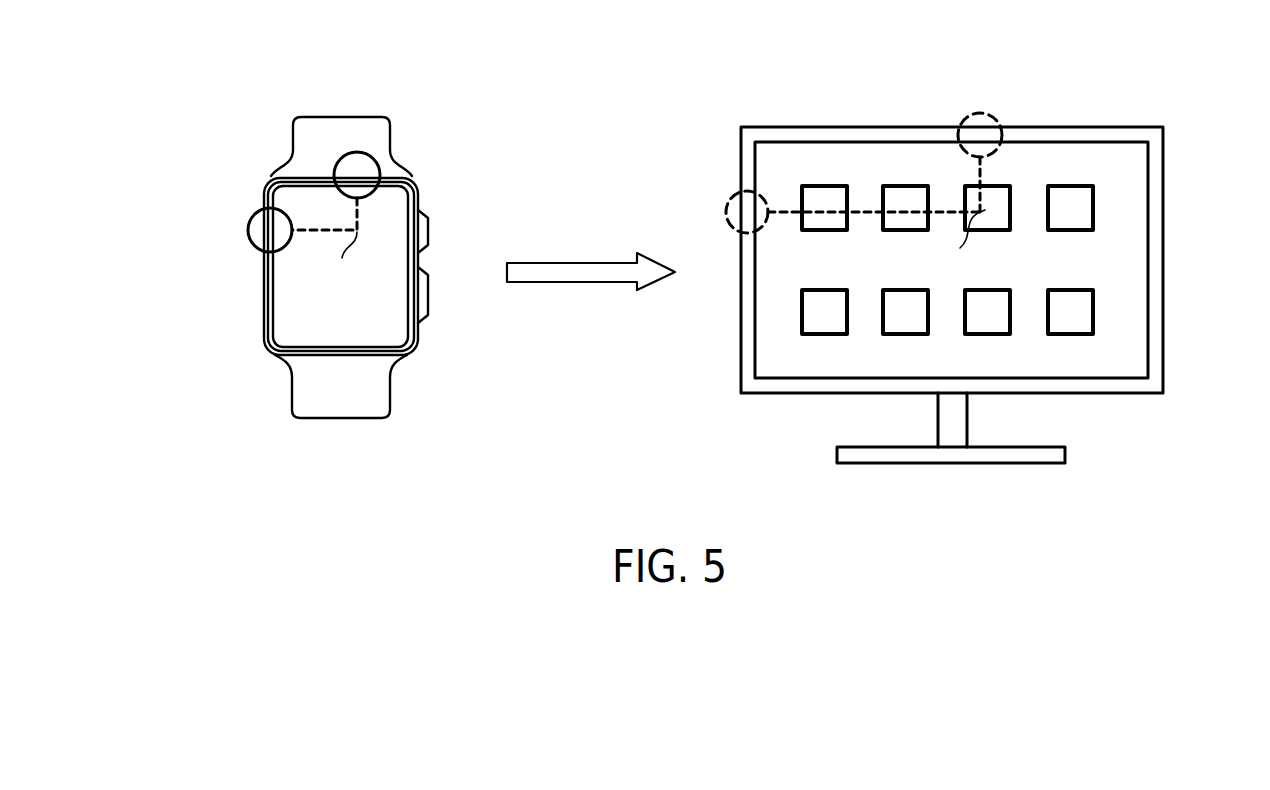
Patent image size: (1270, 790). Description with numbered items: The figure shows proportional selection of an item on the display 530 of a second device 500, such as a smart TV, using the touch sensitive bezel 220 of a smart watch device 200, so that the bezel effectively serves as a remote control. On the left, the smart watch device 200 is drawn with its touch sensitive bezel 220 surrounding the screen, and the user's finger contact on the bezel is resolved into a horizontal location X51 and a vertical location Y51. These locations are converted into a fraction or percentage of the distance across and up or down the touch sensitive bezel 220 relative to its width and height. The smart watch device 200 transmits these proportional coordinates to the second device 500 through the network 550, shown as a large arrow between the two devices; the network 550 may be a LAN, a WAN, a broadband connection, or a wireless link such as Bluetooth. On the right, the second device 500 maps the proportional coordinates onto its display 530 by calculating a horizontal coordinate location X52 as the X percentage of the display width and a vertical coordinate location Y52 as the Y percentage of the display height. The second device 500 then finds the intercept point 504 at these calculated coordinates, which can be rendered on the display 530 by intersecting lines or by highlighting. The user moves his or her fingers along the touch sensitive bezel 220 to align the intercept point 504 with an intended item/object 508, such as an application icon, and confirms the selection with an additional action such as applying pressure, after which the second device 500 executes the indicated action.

The smart watch device 200 is at (324, 292).
The touch sensitive bezel 220 is at (308, 170).
The horizontal location X51 is at (378, 161).
The vertical location Y51 is at (247, 232).
The second device 500 is at (906, 310).
The intercept point 504 is at (985, 210).
The item/object 508 is at (965, 188).
The display 530 is at (1074, 355).
The network 550 is at (576, 283).
The horizontal coordinate location X52 is at (980, 113).
The vertical coordinate location Y52 is at (726, 212).